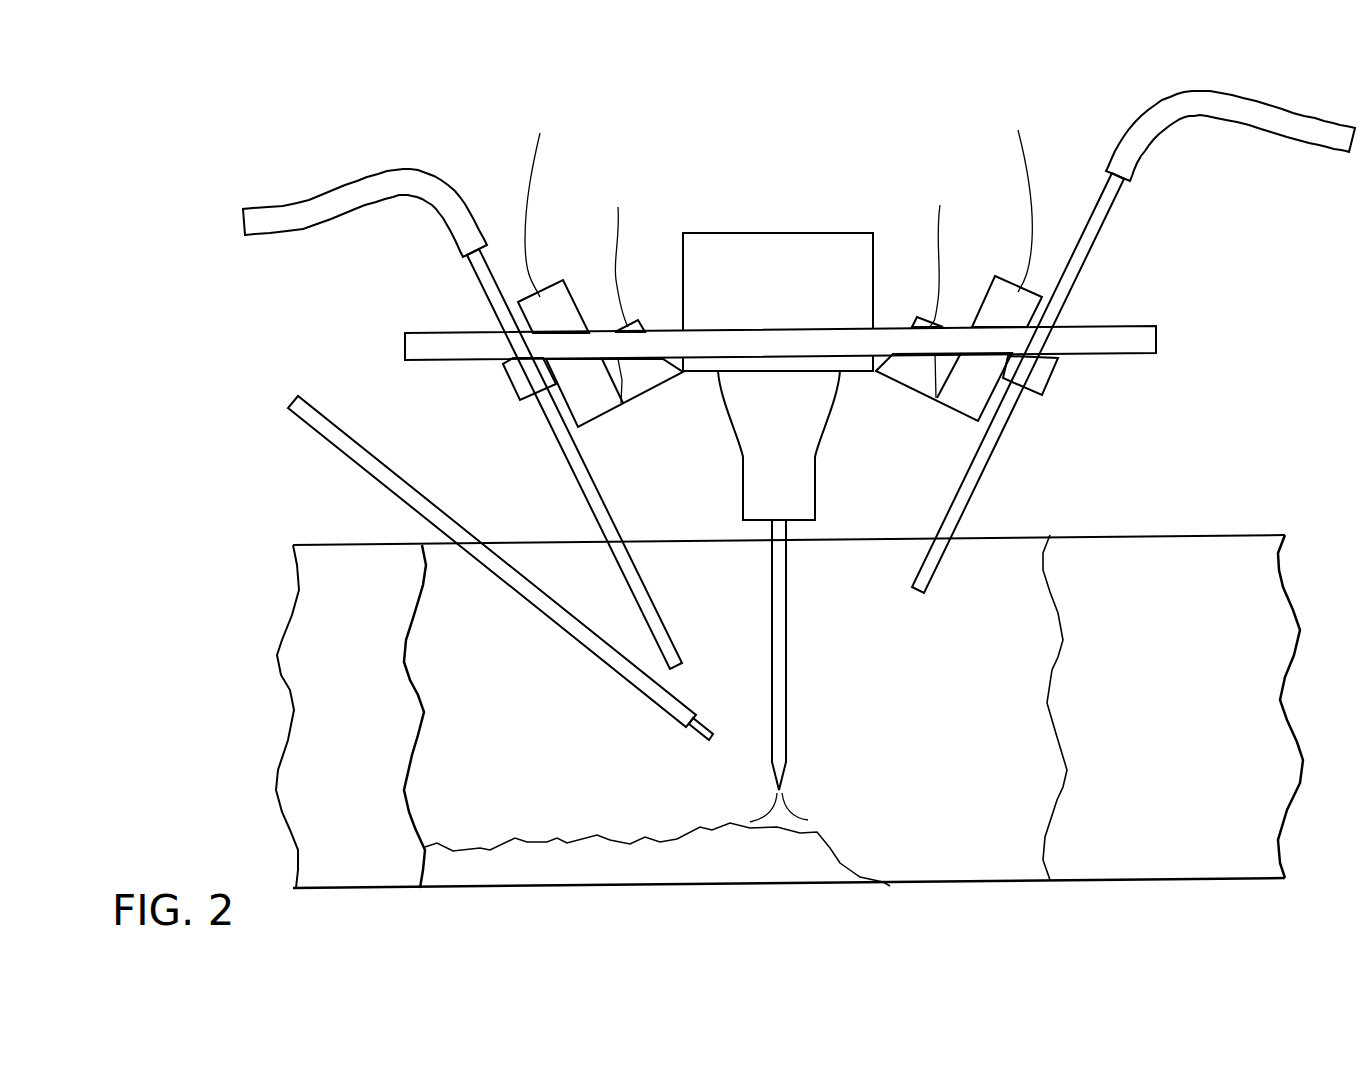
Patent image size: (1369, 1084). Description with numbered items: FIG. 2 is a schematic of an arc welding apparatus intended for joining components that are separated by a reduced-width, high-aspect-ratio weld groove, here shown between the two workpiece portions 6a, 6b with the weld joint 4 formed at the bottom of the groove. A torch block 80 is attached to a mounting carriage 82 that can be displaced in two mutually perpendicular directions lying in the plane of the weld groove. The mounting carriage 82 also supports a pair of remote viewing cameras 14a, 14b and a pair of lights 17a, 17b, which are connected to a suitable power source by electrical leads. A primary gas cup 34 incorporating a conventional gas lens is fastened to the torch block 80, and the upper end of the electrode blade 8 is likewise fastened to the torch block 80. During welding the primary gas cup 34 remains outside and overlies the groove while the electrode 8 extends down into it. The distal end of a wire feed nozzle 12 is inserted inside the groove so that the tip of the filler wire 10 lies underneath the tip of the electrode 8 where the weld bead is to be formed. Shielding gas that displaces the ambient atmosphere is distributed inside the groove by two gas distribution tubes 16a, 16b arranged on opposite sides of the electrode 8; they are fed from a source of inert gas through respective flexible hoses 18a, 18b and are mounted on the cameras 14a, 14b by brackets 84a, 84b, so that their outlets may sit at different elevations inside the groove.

The weld joint / workpiece 4 is at (737, 867).
The first workpiece plate 6a is at (980, 840).
The second workpiece plate 6b is at (1194, 815).
The electrode blade 8 is at (780, 673).
The filler wire 10 is at (697, 737).
The wire feed nozzle 12 is at (565, 630).
The remote viewing camera 14a is at (568, 305).
The remote viewing camera 14b is at (988, 300).
The gas distribution tube 16a is at (580, 468).
The gas distribution tube 16b is at (977, 467).
The light 17a is at (653, 385).
The light 17b is at (902, 385).
The flexible hose 18a is at (413, 175).
The flexible hose 18b is at (1268, 137).
The primary gas cup 34 is at (802, 497).
The torch block 80 is at (738, 243).
The mounting carriage 82 is at (467, 337).
The bracket 84a is at (507, 383).
The bracket 84b is at (1047, 377).